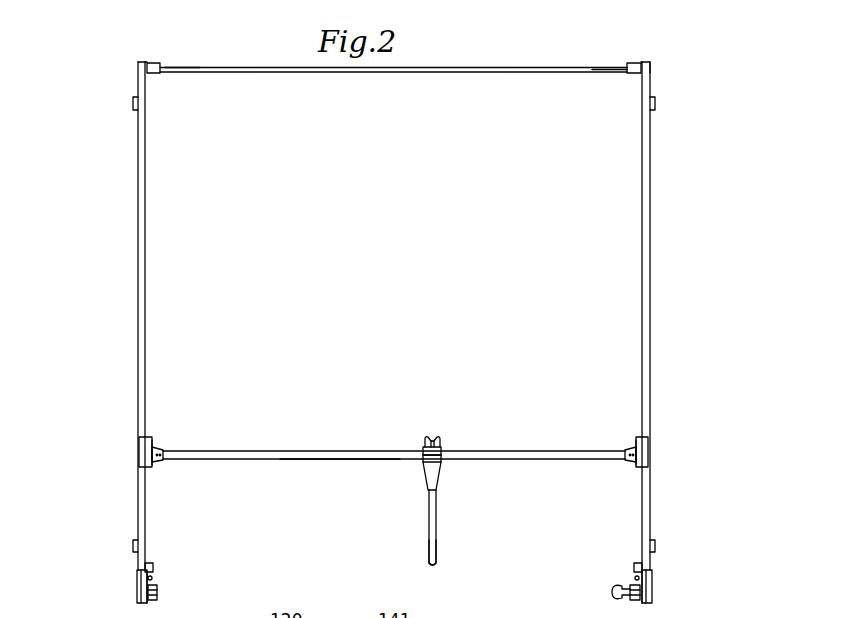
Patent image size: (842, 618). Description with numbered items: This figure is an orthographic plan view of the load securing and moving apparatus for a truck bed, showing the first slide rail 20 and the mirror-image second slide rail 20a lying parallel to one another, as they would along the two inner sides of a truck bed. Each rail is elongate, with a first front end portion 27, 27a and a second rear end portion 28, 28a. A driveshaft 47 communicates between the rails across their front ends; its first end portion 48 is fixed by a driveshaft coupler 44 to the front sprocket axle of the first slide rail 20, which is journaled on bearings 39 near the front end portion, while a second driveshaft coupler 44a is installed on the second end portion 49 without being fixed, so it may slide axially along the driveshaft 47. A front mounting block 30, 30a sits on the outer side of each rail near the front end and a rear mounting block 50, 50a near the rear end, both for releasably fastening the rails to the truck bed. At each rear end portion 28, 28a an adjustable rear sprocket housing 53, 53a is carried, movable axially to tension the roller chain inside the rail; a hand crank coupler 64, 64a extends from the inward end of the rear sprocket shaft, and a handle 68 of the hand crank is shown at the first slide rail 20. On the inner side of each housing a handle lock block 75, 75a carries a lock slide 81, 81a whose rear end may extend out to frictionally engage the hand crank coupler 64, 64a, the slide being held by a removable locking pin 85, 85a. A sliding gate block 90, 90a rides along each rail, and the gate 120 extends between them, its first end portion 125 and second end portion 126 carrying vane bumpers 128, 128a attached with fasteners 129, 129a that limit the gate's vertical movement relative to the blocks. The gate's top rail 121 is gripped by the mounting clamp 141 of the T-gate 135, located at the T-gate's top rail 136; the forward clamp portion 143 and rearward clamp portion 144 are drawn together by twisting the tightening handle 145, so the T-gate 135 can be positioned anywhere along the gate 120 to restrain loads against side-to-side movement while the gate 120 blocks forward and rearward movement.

The first slide rail 20 is at (641, 202).
The second slide rail 20a is at (150, 254).
The first front end portion 27 is at (646, 62).
The first front end portion of second slide rail 27a is at (143, 63).
The second rear end portion 28 is at (645, 562).
The second rear end portion of second slide rail 28a is at (140, 565).
The front mounting block 30 is at (654, 112).
The front mounting block of second slide rail 30a is at (133, 108).
The bearings 39 is at (652, 68).
The driveshaft coupler 44 is at (628, 73).
The second driveshaft coupler 44a is at (158, 74).
The driveshaft 47 is at (373, 73).
The first end portion of driveshaft 48 is at (600, 69).
The second end portion of driveshaft 49 is at (180, 68).
The rear mounting block 50 is at (654, 545).
The rear mounting block of second slide rail 50a is at (133, 547).
The rear sprocket housing 53 is at (649, 576).
The rear sprocket housing of second slide rail 53a is at (143, 596).
The hand crank coupler 64 is at (633, 598).
The hand crank coupler of second slide rail 64a is at (158, 595).
The handle 68 is at (613, 590).
The handle lock block 75 is at (637, 575).
The handle lock block of second slide rail 75a is at (153, 576).
The lock slide 81 is at (635, 567).
The lock slide of second slide rail 81a is at (153, 562).
The removable locking pin 85 is at (652, 590).
The removable locking pin of second slide rail 85a is at (148, 578).
The sliding gate block 90 is at (638, 438).
The sliding gate block of second slide rail 90a is at (150, 446).
The gate 120 is at (272, 452).
The top rail 121 is at (307, 457).
The first end portion 125 is at (628, 453).
The second end portion 126 is at (163, 452).
The vane bumper 128 is at (634, 464).
The vane bumper at second end 128a is at (153, 461).
The fasteners 129 is at (641, 450).
The fasteners at second end 129a is at (150, 455).
The T-gate 135 is at (438, 523).
The top rail of T-gate 136 is at (430, 542).
The mounting clamp 141 is at (444, 446).
The forward clamp portion 143 is at (423, 449).
The rearward clamp portion 144 is at (442, 460).
The tightening handle 145 is at (428, 437).